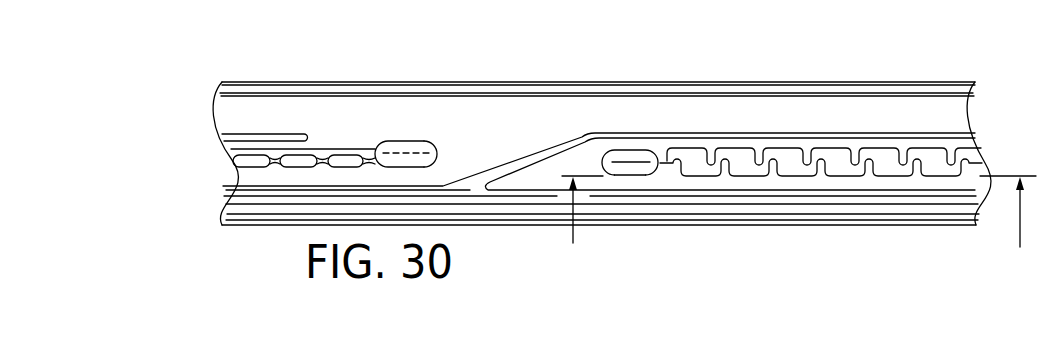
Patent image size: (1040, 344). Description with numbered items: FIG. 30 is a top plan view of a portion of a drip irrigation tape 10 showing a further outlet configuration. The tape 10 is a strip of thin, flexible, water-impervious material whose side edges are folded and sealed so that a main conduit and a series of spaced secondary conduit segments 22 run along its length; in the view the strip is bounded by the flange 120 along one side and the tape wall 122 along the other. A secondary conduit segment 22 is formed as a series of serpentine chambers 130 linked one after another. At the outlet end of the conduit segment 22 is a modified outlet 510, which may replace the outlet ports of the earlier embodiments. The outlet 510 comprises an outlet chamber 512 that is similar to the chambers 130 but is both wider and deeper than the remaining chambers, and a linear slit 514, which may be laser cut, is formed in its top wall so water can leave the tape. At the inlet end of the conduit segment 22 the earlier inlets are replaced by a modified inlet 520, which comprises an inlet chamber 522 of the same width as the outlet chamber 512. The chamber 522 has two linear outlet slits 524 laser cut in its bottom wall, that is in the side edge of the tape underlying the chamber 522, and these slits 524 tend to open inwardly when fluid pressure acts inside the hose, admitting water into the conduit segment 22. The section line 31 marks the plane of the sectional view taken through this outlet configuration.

The drip irrigation tape 10 is at (776, 66).
The secondary conduit segment 22 is at (243, 178).
The section line 31- 31 is at (797, 227).
The flange 120 is at (245, 136).
The tape wall 122 is at (250, 190).
The chambers 130 is at (765, 170).
The modified outlet 510 is at (630, 137).
The outlet chamber 512 is at (629, 169).
The linear slit 514 is at (620, 158).
The modified inlet 520 is at (447, 128).
The inlet chamber 522 is at (431, 141).
The linear outlet slits 524 is at (411, 150).